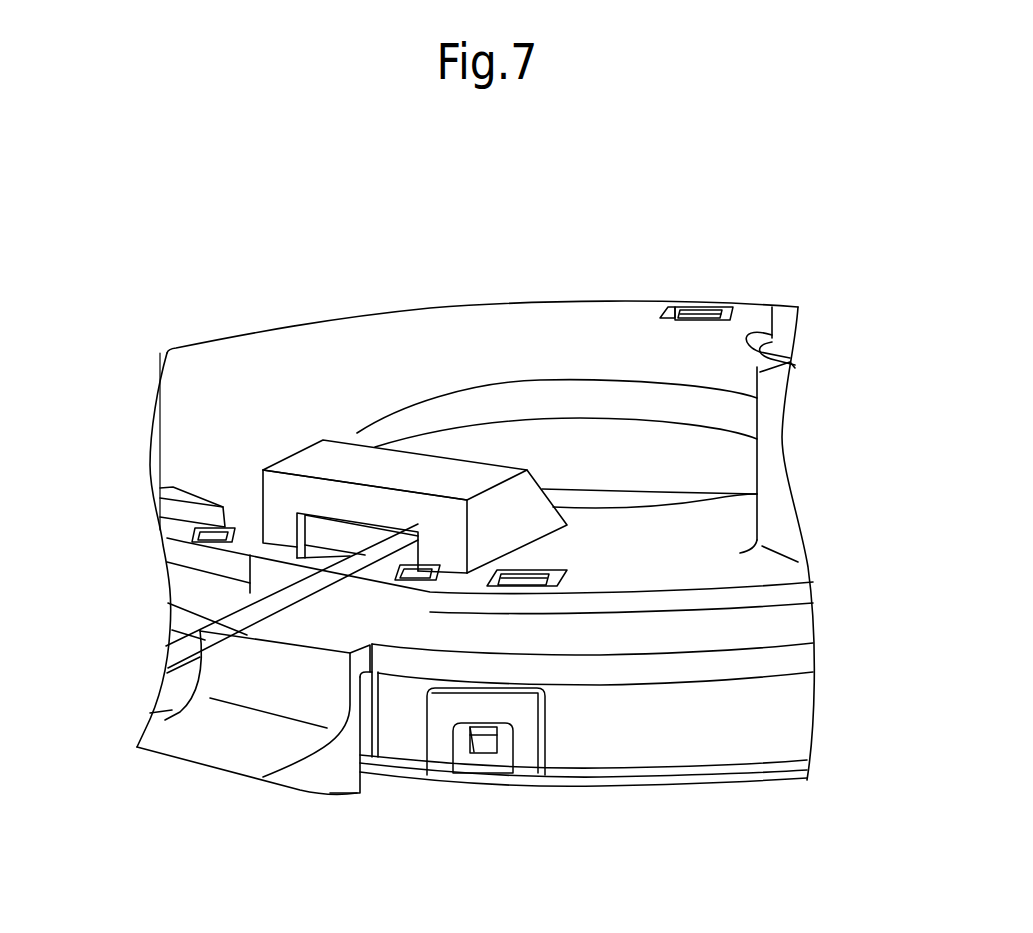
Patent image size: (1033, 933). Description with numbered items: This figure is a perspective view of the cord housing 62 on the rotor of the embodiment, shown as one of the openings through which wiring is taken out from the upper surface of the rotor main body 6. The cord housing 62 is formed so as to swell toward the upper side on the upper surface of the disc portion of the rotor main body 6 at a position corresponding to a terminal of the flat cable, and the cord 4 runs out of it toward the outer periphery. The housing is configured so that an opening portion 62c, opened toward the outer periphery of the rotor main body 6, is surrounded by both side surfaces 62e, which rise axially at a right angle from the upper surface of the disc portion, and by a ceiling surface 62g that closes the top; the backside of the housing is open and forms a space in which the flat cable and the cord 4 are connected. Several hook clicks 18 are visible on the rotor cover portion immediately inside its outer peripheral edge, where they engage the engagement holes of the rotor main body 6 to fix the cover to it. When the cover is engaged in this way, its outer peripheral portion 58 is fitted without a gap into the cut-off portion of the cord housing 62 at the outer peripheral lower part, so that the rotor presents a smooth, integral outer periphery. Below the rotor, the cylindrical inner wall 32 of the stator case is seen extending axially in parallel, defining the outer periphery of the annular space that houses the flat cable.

The cord 4 is at (165, 616).
The rotor main body 6 is at (396, 245).
The hook click 18 is at (208, 527).
The inner wall 32 is at (680, 727).
The outer peripheral portion 58 is at (405, 625).
The cord housing 62 is at (452, 399).
The opening portion 62c is at (343, 518).
The side surfaces 62e is at (527, 497).
The ceiling surface 62g is at (453, 467).